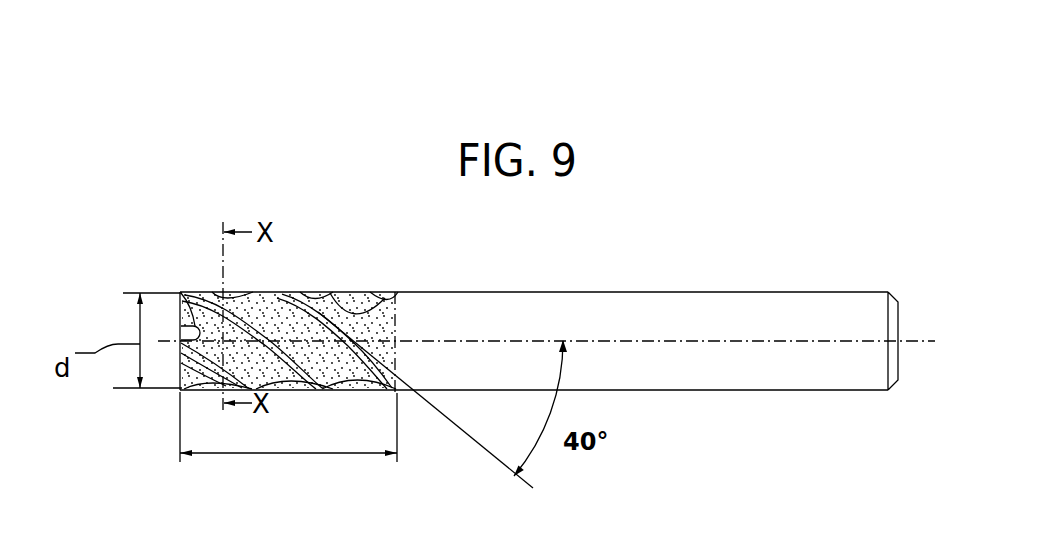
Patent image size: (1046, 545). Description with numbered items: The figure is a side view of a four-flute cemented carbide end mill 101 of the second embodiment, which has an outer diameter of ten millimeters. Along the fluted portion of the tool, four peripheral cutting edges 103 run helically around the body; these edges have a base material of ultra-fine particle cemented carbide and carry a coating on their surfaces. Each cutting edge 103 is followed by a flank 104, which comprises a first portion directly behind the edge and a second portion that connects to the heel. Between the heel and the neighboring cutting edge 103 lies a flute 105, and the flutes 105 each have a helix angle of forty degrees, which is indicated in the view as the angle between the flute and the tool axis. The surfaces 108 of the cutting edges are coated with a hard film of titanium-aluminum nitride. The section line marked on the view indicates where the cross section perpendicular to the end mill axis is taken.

The cemented carbide end mill 101 is at (722, 278).
The peripheral cutting edge 103 is at (356, 290).
The flank 104 is at (336, 291).
The flute 105 is at (258, 309).
The surfaces of the cutting edges 108 is at (287, 456).